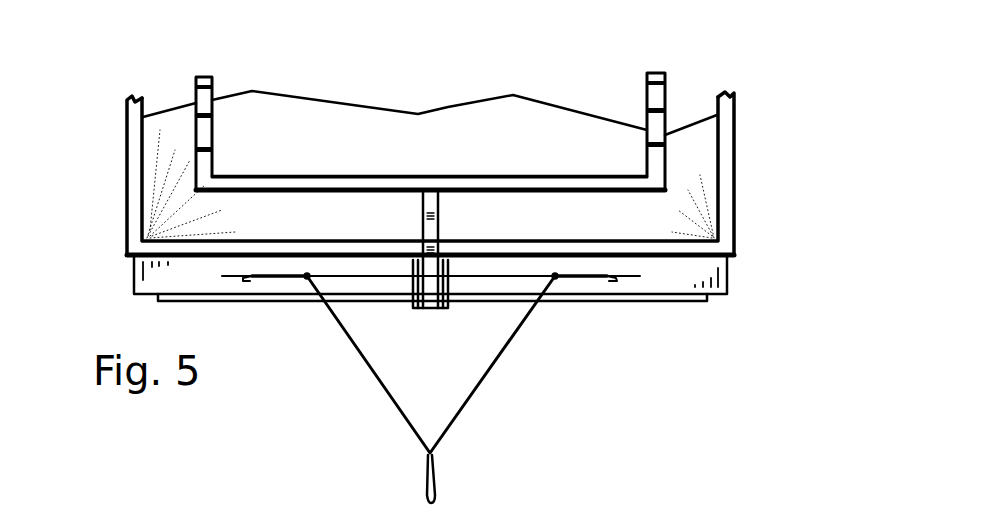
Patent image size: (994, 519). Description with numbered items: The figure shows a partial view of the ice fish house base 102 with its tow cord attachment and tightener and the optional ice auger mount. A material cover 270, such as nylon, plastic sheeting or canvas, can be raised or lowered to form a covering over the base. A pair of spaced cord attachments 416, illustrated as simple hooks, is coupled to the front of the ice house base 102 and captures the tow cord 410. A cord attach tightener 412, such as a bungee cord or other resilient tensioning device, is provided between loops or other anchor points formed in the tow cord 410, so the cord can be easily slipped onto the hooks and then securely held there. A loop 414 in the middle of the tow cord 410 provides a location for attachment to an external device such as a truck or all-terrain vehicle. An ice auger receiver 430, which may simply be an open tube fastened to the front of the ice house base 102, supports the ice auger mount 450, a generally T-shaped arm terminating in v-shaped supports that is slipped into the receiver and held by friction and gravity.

The ice fish house base 102 is at (742, 228).
The material cover 270 is at (527, 112).
The ice auger mount 450 is at (670, 185).
The ice auger receiver 430 is at (430, 310).
The cord attach tightener 412 is at (492, 277).
The cord attachments 416 is at (249, 281).
The tow cord 410 is at (374, 390).
The loop 414 is at (435, 488).